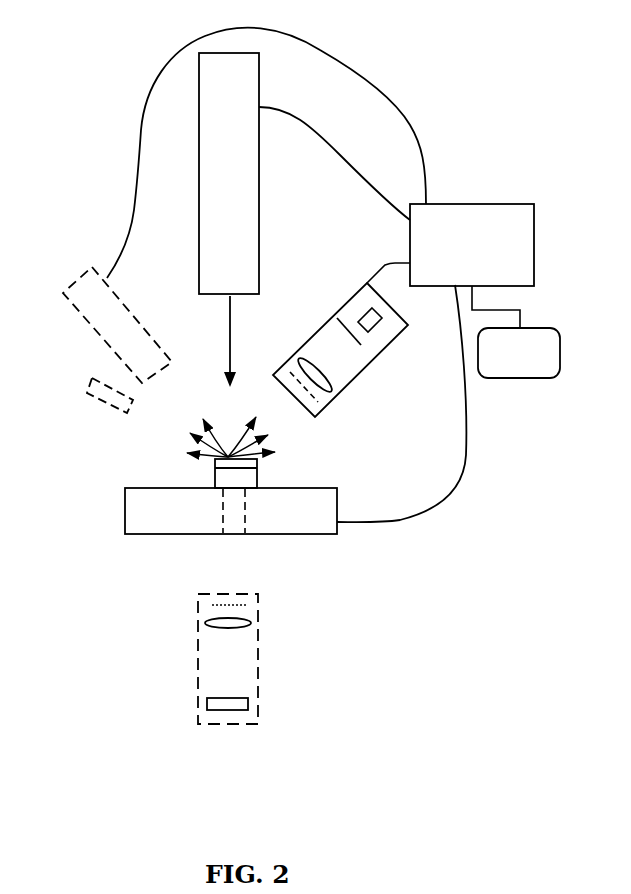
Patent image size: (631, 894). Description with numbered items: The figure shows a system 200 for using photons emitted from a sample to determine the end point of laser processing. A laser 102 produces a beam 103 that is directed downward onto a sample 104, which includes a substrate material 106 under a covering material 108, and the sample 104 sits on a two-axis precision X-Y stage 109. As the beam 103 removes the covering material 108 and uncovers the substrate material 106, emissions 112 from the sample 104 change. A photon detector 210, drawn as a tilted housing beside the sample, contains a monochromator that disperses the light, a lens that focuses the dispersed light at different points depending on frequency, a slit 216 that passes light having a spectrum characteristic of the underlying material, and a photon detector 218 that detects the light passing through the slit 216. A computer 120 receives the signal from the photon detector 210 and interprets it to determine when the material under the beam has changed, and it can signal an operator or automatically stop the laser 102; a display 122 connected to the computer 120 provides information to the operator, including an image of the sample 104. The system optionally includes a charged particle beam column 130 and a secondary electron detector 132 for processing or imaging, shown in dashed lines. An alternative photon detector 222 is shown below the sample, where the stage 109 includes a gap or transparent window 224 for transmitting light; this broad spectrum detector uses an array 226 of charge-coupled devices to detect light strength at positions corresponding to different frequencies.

The system 200 is at (119, 171).
The laser 102 is at (259, 203).
The beam 103 is at (230, 315).
The sample 104 is at (196, 478).
The substrate material 106 is at (258, 482).
The covering material 108 is at (258, 462).
The X-Y stage 109 is at (337, 500).
The emissions 112 is at (205, 428).
The computer 120 is at (487, 204).
The display 122 is at (532, 328).
The charged particle beam column 130 is at (105, 283).
The secondary electron detector 132 is at (111, 405).
The photon detector 210 is at (347, 302).
The slit 216 is at (365, 348).
The photon detector 218 is at (378, 312).
The alternative photon detector 222 is at (258, 695).
The transparent window 224 is at (237, 534).
The array of charge-coupled devices 226 is at (207, 703).